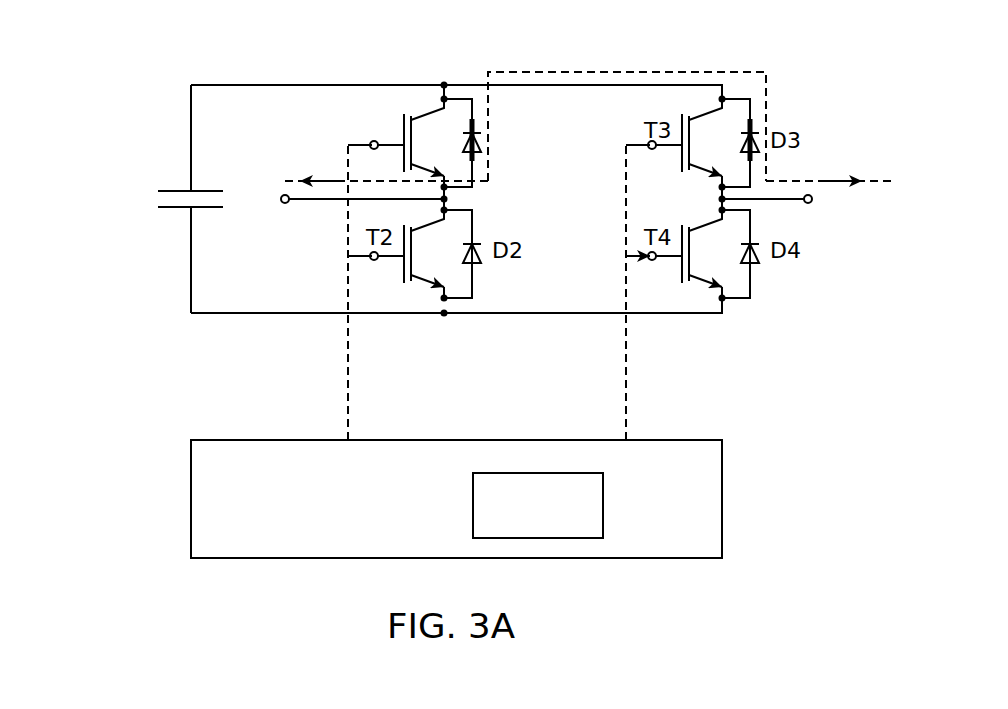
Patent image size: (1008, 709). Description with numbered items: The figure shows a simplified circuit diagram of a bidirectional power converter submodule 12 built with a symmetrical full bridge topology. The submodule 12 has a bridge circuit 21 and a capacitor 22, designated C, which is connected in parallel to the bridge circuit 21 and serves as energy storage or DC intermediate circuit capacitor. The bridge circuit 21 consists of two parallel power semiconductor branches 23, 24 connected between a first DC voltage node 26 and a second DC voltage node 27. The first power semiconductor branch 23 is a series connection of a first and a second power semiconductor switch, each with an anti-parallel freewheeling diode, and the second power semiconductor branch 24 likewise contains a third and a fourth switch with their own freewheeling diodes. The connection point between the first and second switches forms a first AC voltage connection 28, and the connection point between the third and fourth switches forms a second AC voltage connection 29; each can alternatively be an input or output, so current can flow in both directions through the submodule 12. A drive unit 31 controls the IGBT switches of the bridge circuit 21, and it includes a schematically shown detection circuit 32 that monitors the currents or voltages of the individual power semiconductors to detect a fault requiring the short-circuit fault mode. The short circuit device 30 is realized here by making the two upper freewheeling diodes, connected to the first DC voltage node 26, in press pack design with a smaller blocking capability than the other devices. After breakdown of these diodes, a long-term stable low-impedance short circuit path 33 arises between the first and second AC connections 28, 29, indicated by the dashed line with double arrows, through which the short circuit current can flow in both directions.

The bidirectional submodule 12 is at (135, 25).
The bridge circuit 21 is at (405, 100).
The capacitor 22 is at (122, 178).
The first power semiconductor branch 23 is at (452, 92).
The second power semiconductor branch 24 is at (733, 92).
The first DC voltage node 26 is at (565, 85).
The second DC voltage node 27 is at (680, 313).
The first AC voltage connection 28 is at (284, 206).
The second AC voltage connection 29 is at (810, 204).
The short circuit device 30 is at (493, 112).
The drive unit 31 is at (225, 440).
The detection circuit 32 is at (538, 473).
The short circuit path 33 is at (620, 72).